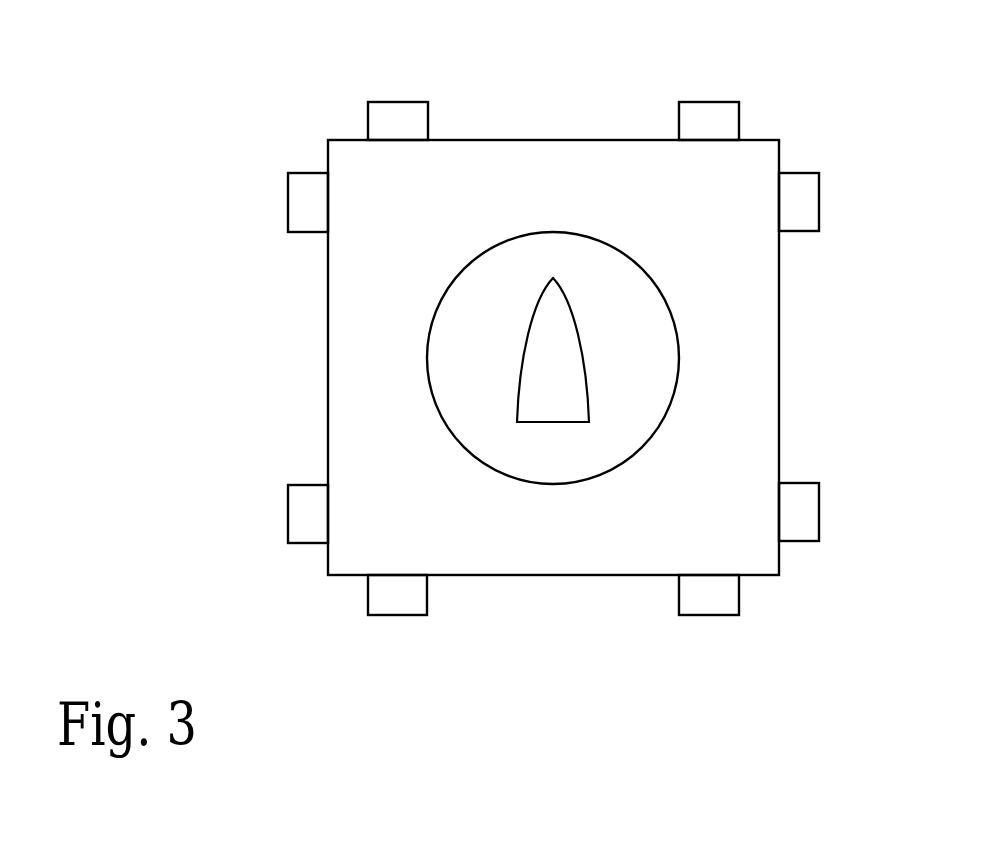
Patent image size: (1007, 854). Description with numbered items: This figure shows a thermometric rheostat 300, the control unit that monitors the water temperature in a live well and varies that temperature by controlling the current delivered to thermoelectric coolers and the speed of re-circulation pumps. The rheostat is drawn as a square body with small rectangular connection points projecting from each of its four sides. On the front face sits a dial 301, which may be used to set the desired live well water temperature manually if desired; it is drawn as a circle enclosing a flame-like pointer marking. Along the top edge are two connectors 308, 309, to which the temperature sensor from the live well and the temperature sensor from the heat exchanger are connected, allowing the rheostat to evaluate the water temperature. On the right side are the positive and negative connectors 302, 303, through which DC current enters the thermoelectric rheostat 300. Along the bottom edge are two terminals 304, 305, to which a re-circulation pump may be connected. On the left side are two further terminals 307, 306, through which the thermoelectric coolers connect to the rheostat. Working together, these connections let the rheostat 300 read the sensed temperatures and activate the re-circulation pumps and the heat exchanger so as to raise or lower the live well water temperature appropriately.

The thermometric rheostat 300 is at (552, 577).
The dial 301 is at (679, 358).
The positive connector 302 is at (820, 202).
The negative connector 303 is at (819, 513).
The terminal 304 is at (708, 618).
The terminal 305 is at (397, 618).
The terminal 306 is at (288, 513).
The terminal 307 is at (288, 203).
The connector 308 is at (367, 122).
The connector 309 is at (739, 120).